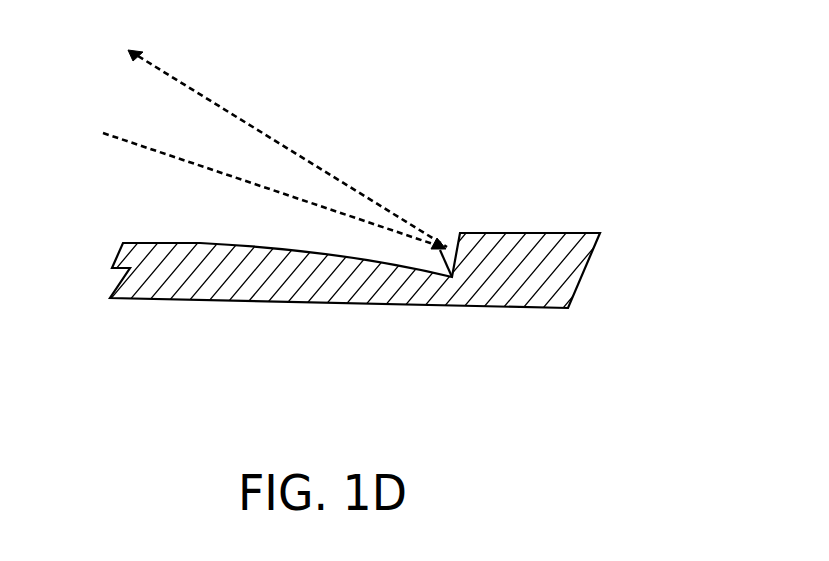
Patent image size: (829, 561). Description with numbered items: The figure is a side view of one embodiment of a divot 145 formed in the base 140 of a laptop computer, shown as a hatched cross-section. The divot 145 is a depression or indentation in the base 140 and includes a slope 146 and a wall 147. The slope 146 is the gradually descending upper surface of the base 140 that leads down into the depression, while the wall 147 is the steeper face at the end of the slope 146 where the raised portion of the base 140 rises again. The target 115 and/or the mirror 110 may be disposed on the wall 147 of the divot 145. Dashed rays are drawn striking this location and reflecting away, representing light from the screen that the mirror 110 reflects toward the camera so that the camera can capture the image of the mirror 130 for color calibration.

The image of the mirror 130 is at (210, 103).
The mirror 110 is at (452, 208).
The target 115 is at (433, 262).
The base 140 is at (512, 233).
The divot 145 is at (400, 303).
The slope 146 is at (312, 303).
The wall 147 is at (468, 305).